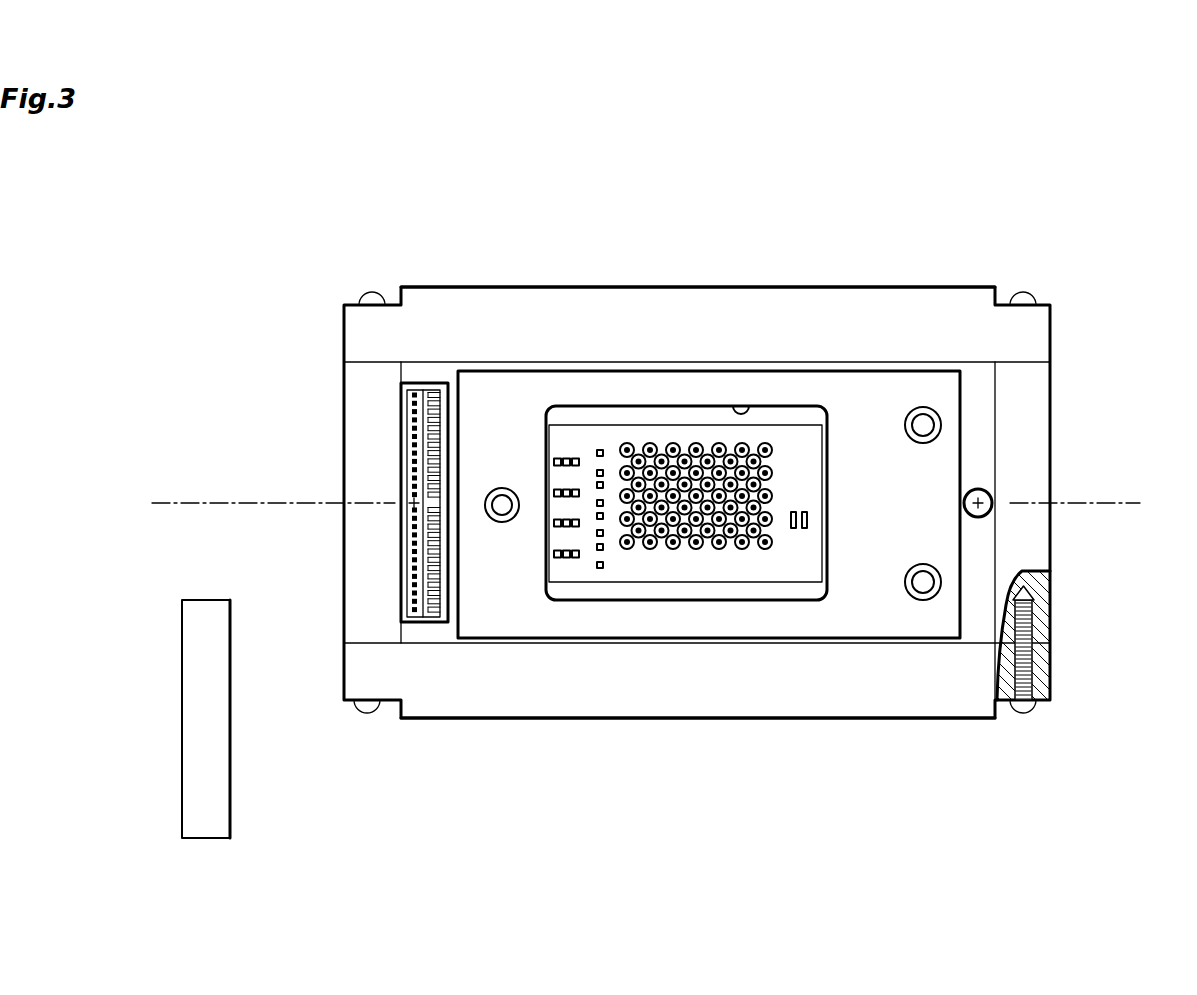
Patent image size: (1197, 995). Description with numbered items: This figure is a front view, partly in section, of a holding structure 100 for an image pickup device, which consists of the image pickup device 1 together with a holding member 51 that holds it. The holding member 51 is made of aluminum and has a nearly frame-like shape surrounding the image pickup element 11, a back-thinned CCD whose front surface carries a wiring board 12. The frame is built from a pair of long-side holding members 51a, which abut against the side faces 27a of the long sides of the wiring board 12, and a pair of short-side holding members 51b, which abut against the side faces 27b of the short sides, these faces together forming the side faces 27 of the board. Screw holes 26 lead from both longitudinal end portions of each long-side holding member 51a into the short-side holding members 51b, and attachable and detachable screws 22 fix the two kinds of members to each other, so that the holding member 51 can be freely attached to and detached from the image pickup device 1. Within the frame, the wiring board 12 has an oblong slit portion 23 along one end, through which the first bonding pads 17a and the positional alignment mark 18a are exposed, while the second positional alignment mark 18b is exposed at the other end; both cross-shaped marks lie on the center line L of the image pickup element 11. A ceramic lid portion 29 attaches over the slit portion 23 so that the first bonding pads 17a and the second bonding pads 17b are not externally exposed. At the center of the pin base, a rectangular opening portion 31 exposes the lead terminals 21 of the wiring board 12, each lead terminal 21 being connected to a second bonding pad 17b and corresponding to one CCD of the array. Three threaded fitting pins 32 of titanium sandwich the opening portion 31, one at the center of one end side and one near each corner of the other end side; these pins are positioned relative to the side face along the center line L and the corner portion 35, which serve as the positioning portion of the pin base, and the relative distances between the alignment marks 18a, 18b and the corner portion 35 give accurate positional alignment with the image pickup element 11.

The holding structure 100 is at (1045, 183).
The holding member 51 is at (880, 285).
The long-side holding member 51a is at (800, 302).
The short-side holding member 51b is at (1045, 514).
The side faces 27 is at (695, 513).
The side faces of the long sides 27a is at (590, 362).
The side faces of the short sides 27b is at (398, 378).
The screws 22 is at (375, 298).
The image pickup device 1 is at (755, 655).
The wiring board 12 is at (1000, 403).
The image pickup element 11 is at (985, 494).
The slit portion 23 is at (398, 418).
The positional alignment mark 18a is at (413, 497).
The positional alignment mark 18b is at (993, 507).
The first bonding pad 17a is at (405, 548).
The second bonding pad 17b is at (433, 624).
The corner portion 35 is at (455, 645).
The lid portion 29 is at (218, 768).
The opening portion 31 is at (741, 406).
The lead terminal 21 is at (672, 448).
The threaded fitting pin 32 is at (502, 488).
The screw hole 26 is at (1037, 632).
The center line L is at (205, 503).